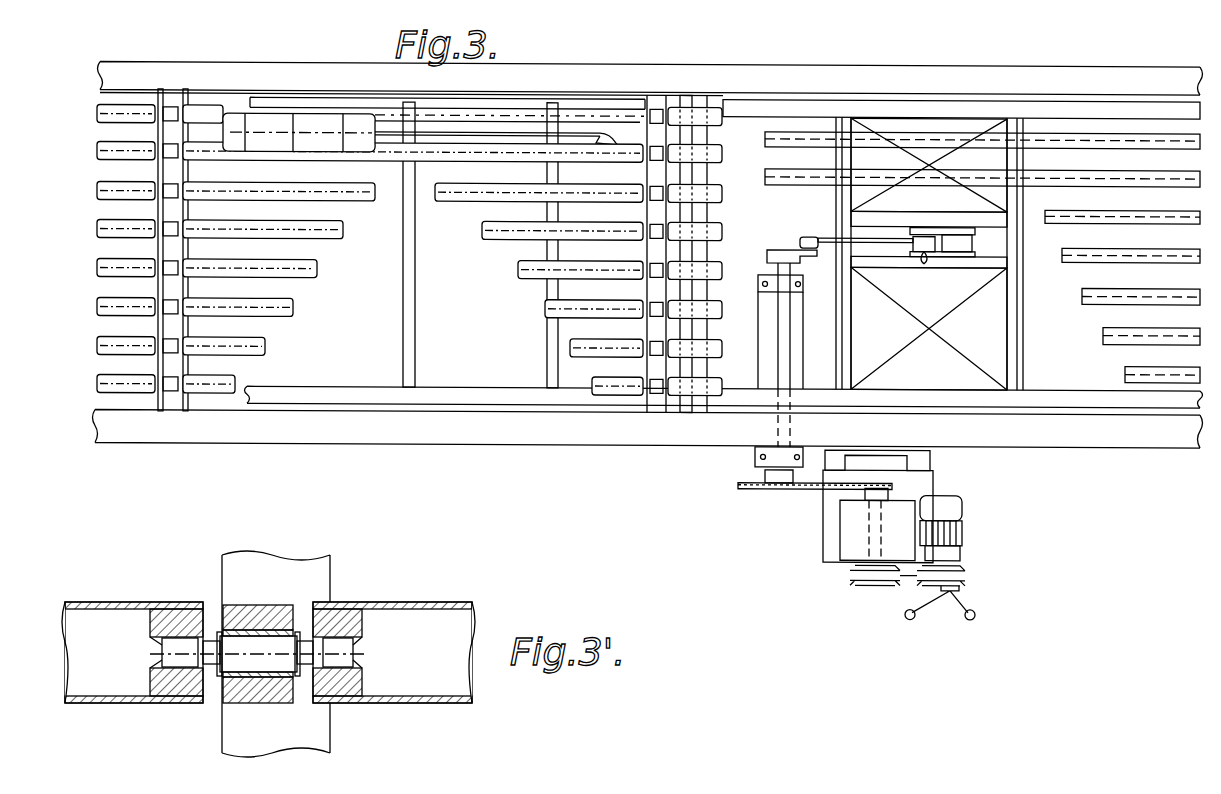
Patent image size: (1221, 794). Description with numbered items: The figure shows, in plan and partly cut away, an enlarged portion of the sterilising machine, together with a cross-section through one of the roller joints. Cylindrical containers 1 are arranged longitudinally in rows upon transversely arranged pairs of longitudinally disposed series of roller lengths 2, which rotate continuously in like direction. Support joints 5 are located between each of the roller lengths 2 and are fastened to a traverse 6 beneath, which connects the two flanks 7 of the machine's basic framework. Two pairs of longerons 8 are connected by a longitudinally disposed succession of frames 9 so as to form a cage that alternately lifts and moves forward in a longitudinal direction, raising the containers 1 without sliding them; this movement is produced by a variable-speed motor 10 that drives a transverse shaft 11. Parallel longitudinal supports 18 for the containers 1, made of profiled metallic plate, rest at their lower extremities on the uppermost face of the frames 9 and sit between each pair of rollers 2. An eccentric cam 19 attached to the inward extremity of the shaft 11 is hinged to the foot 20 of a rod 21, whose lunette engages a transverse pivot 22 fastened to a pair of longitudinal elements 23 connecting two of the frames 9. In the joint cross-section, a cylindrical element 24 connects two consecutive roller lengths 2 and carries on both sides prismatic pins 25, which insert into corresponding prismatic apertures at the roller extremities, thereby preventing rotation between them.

In FIG. 3, the cylindrical container 1 is at (314, 122).
In FIG. 3, the roller length 2 is at (130, 106).
In FIG. 3', the roller length 2 is at (120, 602).
In FIG. 3, the support joint 5 is at (172, 112).
In FIG. 3', the support joint 5 is at (260, 611).
In FIG. 3, the traverse 6 is at (169, 398).
In FIG. 3', the traverse 6 is at (322, 578).
In FIG. 3, the flank 7 is at (1070, 102).
In FIG. 3, the longeron 8 is at (920, 108).
In FIG. 3, the frame 9 is at (408, 366).
In FIG. 3, the variable-speed motor 10 is at (966, 524).
In FIG. 3, the transverse shaft 11 is at (786, 362).
In FIG. 3, the longitudinal support 18 is at (622, 140).
In FIG. 3, the eccentric cam 19 is at (814, 256).
In FIG. 3, the foot 20 is at (803, 228).
In FIG. 3, the rod 21 is at (878, 232).
In FIG. 3, the transverse pivot 22 is at (940, 232).
In FIG. 3, the longitudinal element 23 is at (978, 276).
In FIG. 3', the cylindrical element 24 is at (242, 670).
In FIG. 3', the prismatic pin 25 is at (180, 642).